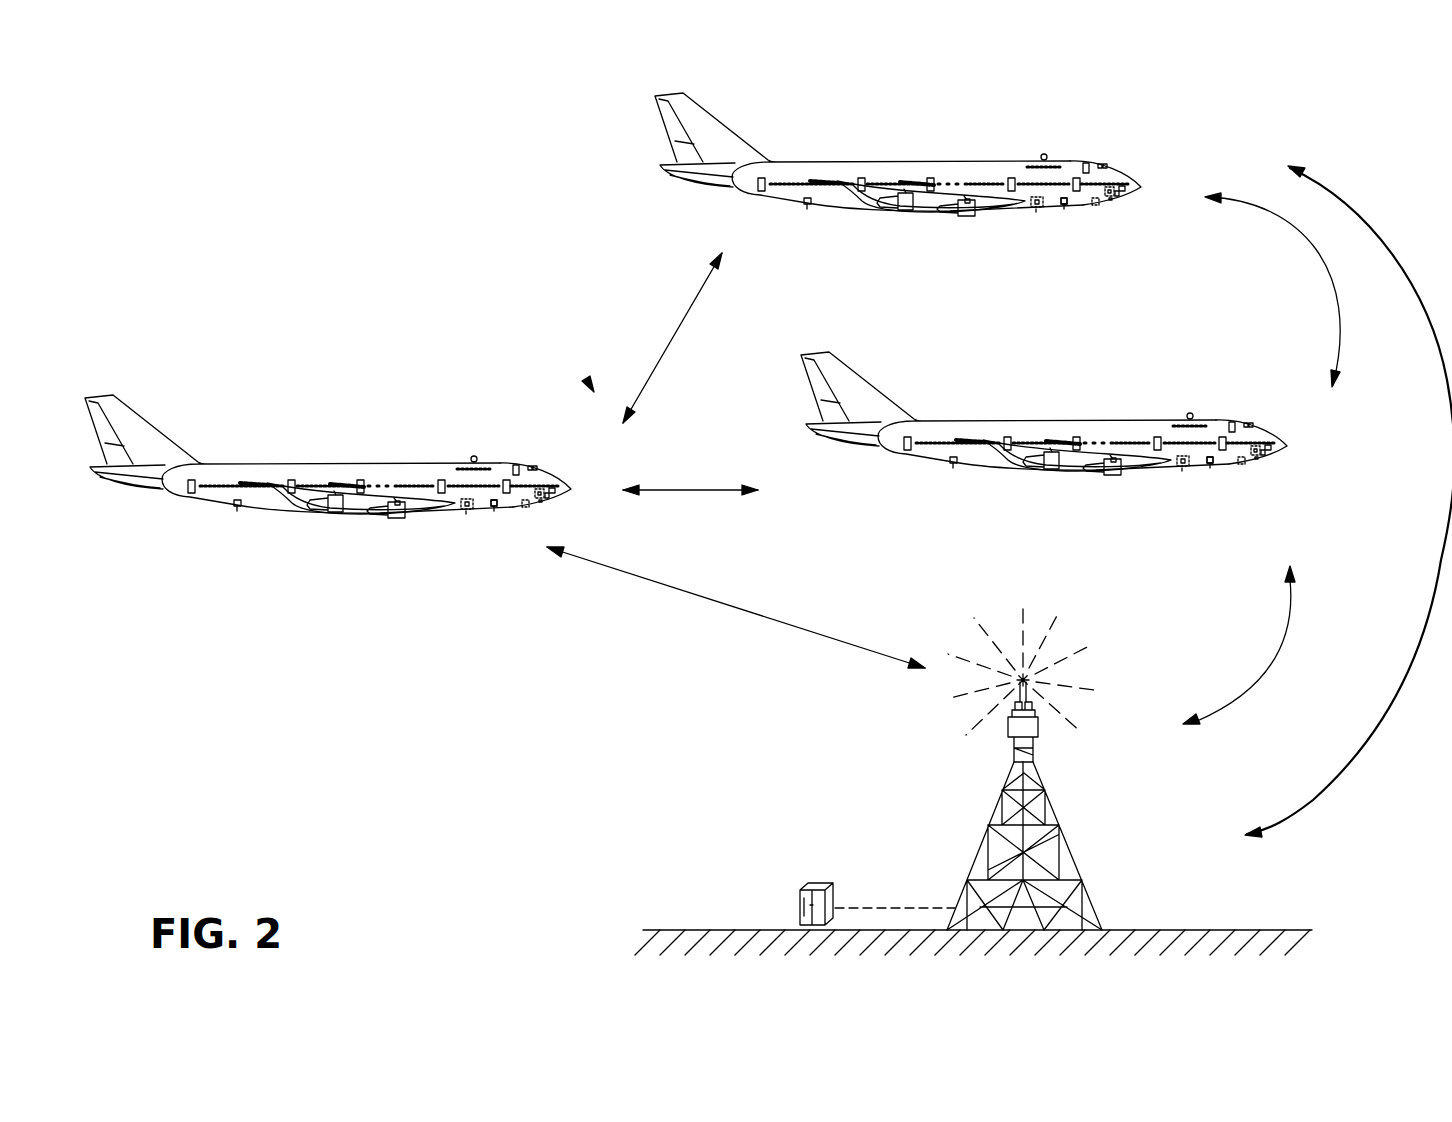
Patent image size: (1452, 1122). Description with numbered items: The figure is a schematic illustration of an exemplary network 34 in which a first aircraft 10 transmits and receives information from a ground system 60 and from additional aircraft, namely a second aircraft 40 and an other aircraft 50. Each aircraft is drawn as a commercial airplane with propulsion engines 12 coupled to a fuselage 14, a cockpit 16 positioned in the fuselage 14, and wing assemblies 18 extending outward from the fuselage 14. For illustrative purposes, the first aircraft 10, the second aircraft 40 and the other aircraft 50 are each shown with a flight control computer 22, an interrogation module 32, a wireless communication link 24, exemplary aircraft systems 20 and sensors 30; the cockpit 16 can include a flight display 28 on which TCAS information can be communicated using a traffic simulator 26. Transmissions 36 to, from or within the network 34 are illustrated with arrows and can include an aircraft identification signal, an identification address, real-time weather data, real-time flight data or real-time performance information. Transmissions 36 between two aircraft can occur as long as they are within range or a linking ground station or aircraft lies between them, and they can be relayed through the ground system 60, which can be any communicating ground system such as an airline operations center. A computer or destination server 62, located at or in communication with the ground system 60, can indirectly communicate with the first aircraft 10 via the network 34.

The first aircraft 10 is at (304, 451).
The propulsion engine 12 is at (714, 369).
The fuselage 14 is at (732, 309).
The cockpit 16 is at (887, 302).
The wing assembly 18 is at (705, 364).
The aircraft systems 20 is at (730, 391).
The flight control computer 22 is at (940, 312).
The wireless communication link 24 is at (927, 371).
The traffic simulator 26 is at (804, 373).
The flight display 28 is at (939, 348).
The sensor 30 is at (548, 492).
The interrogation module 32 is at (877, 410).
The network 34 is at (587, 380).
The transmissions 36 is at (677, 332).
The second aircraft 40 is at (874, 149).
The other aircraft 50 is at (1020, 408).
The ground system 60 is at (1076, 823).
The destination server 62 is at (800, 888).